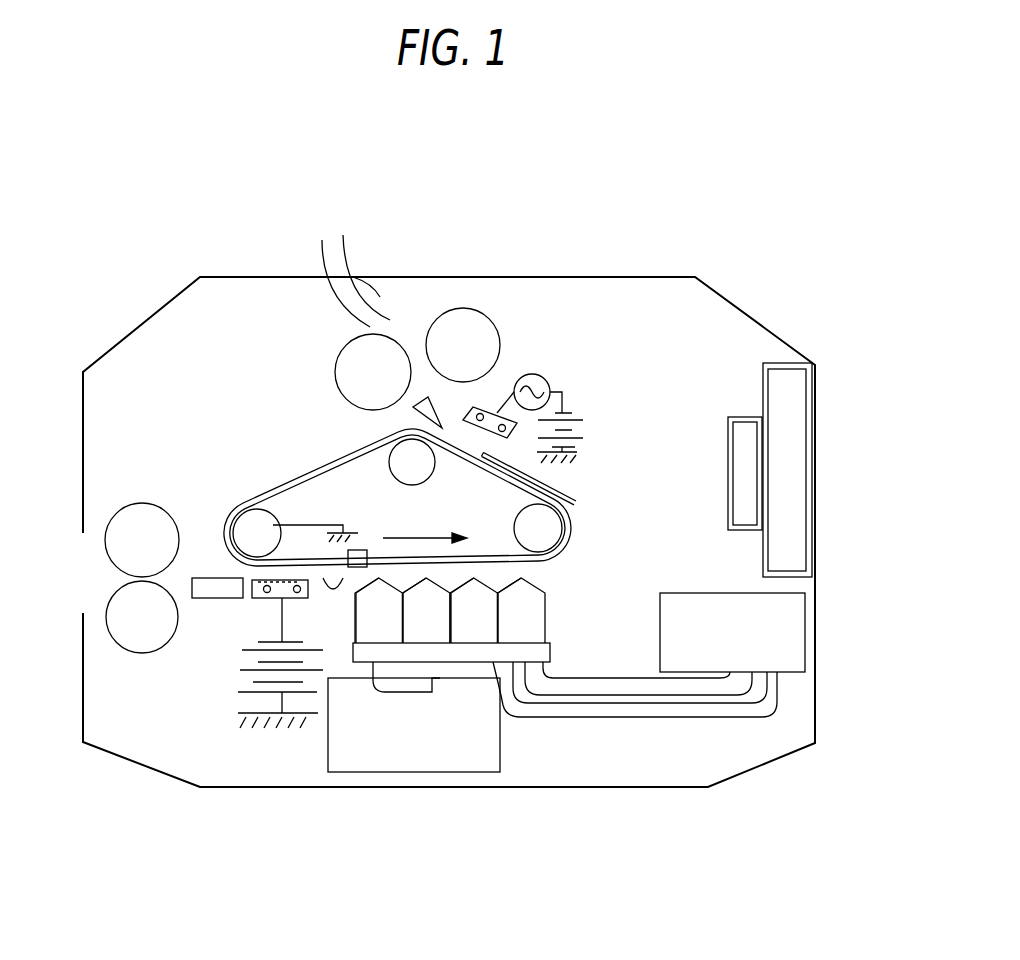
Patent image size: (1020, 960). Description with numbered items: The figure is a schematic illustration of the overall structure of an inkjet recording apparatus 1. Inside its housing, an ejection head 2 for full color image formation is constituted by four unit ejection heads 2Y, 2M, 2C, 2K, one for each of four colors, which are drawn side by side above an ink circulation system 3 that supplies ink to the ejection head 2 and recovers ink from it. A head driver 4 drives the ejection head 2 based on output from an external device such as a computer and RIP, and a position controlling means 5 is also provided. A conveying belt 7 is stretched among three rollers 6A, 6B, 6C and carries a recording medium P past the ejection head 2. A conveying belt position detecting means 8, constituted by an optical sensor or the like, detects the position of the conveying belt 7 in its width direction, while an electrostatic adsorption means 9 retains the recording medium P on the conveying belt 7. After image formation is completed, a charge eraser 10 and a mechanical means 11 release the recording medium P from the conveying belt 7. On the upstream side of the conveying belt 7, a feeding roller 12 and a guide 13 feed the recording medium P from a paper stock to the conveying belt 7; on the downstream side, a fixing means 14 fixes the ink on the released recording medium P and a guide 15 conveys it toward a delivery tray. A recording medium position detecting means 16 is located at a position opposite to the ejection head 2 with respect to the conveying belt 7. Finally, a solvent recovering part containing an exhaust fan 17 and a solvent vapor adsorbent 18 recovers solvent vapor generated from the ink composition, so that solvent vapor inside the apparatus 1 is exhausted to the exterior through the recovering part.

The inkjet recording apparatus 1 is at (773, 290).
The ejection head 2 is at (549, 592).
The unit ejection head 2Y is at (387, 635).
The unit ejection head 2M is at (418, 635).
The unit ejection head 2C is at (472, 635).
The unit ejection head 2K is at (510, 635).
The ink circulation system 3 is at (782, 678).
The head driver 4 is at (500, 754).
The position controlling means 5 is at (550, 657).
The roller 6A is at (275, 518).
The roller 6B is at (517, 523).
The roller 6C is at (396, 476).
The conveying belt 7 is at (282, 488).
The conveying belt position detecting means 8 is at (357, 567).
The electrostatic adsorption means 9 is at (262, 612).
The charge eraser 10 is at (545, 377).
The mechanical means 11 is at (415, 408).
The feeding roller 12 is at (104, 557).
The guide 13 is at (204, 599).
The fixing means 14 is at (473, 308).
The guide 15 is at (380, 297).
The recording medium position detecting means 16 is at (333, 590).
The exhaust fan 17 is at (727, 433).
The solvent vapor adsorbent 18 is at (807, 438).
The recording medium P is at (602, 527).